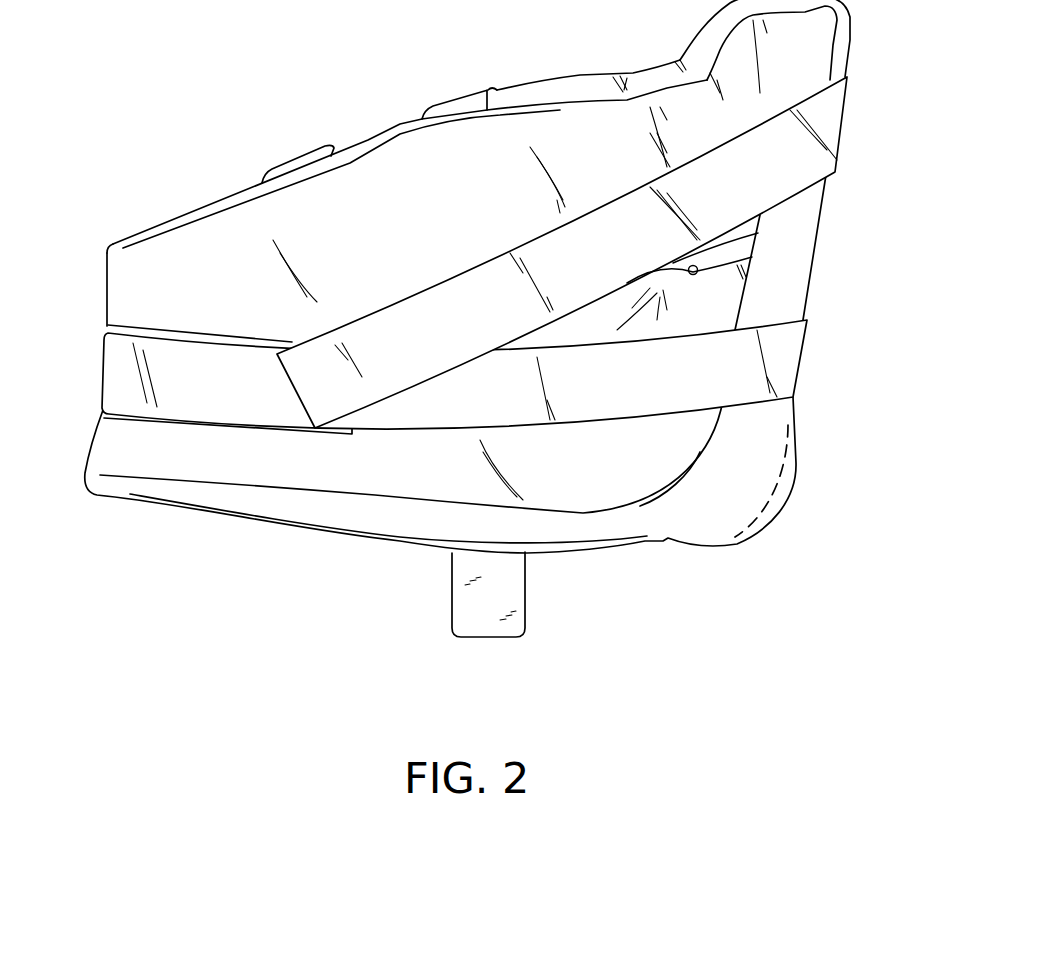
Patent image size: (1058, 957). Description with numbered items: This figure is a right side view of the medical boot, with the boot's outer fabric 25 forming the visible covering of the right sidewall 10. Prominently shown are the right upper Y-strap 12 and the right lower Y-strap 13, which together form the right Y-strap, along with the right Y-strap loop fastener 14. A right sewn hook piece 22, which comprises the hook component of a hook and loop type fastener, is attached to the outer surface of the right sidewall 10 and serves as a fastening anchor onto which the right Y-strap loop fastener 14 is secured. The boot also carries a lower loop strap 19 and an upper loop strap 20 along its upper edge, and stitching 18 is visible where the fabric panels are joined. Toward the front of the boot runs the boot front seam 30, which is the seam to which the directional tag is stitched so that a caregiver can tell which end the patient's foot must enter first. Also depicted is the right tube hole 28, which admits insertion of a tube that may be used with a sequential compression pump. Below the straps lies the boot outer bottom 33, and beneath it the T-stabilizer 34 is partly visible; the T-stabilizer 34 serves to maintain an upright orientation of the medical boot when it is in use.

The right sidewall 10 is at (438, 306).
The outer fabric 25 is at (188, 270).
The right upper Y-strap 12 is at (772, 178).
The right lower Y-strap 13 is at (728, 388).
The right Y-strap loop fastener 14 is at (194, 387).
The stitching 18 is at (188, 214).
The lower loop strap 19 is at (304, 157).
The upper loop strap 20 is at (451, 102).
The right sewn hook piece 22 is at (174, 327).
The right tube hole 28 is at (698, 274).
The boot front seam 30 is at (852, 30).
The boot outer bottom 33 is at (307, 533).
The T-stabilizer 34 is at (527, 589).